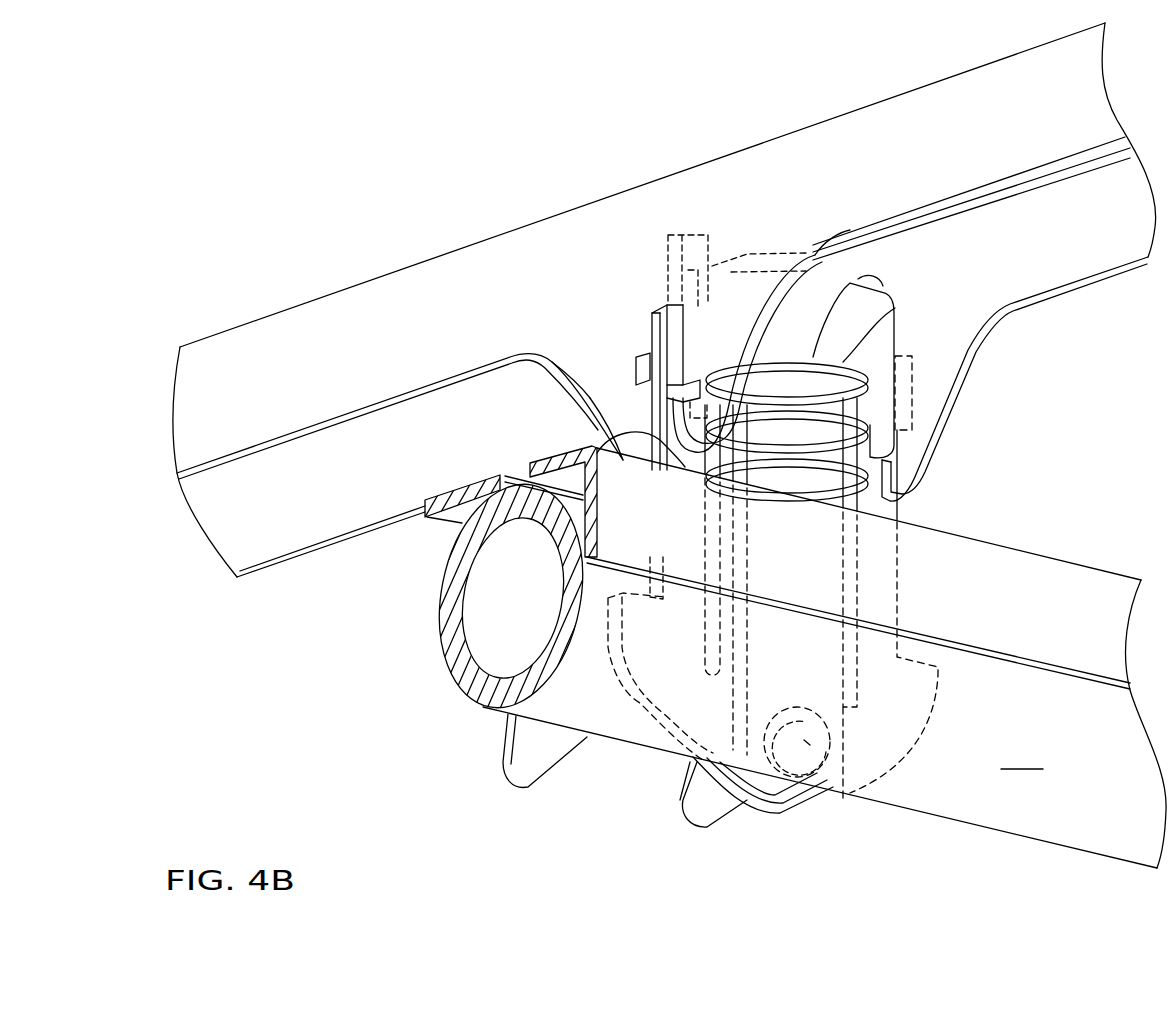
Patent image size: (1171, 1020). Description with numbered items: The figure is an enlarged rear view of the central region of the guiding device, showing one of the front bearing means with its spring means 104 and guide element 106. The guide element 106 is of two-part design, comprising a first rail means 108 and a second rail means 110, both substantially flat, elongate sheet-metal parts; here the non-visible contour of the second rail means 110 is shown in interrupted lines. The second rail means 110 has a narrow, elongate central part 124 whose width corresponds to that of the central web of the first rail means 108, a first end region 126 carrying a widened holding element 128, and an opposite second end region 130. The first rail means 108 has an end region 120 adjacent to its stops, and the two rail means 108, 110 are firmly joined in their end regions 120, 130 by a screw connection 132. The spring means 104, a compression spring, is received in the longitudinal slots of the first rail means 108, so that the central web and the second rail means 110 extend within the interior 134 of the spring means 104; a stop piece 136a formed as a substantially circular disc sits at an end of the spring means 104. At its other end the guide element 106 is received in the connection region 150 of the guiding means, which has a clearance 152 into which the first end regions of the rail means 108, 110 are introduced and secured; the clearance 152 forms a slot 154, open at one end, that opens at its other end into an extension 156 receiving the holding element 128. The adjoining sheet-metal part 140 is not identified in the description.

The spring means 104 is at (800, 440).
The guide element 106 is at (628, 795).
The first rail means 108 is at (607, 432).
The second rail means 110 is at (810, 325).
The end region 120 is at (672, 843).
The central part 124 is at (793, 563).
The first end region 126 is at (753, 245).
The holding element 128 is at (805, 300).
The second end region 130 is at (798, 828).
The screw connection 132 is at (825, 770).
The interior 134 is at (805, 473).
The stop piece 136a is at (845, 360).
The lower panel 140 is at (824, 658).
The connection region 150 is at (596, 350).
The clearance 152 is at (597, 396).
The slot 154 is at (603, 412).
The extension 156 is at (652, 375).